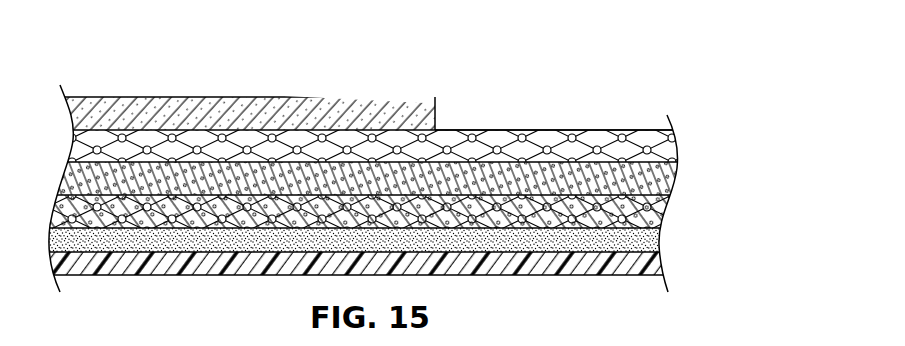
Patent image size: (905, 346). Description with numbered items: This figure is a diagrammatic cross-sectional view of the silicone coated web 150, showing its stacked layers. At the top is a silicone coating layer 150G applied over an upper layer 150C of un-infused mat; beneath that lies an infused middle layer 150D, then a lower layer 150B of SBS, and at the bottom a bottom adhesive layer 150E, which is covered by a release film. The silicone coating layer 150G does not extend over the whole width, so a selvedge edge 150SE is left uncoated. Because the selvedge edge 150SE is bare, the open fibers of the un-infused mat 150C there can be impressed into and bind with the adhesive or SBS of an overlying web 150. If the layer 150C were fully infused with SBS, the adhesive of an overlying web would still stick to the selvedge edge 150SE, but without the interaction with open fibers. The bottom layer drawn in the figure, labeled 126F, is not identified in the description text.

The silicone coated web 150 is at (225, 82).
The silicone coating layer 150G is at (100, 108).
The selvedge edge 150SE is at (516, 118).
The upper layer of un-infused mat 150C is at (645, 140).
The infused middle layer 150D is at (672, 176).
The lower layer of SBS 150B is at (668, 212).
The bottom adhesive layer 150E is at (664, 243).
The film layer 126F is at (590, 268).